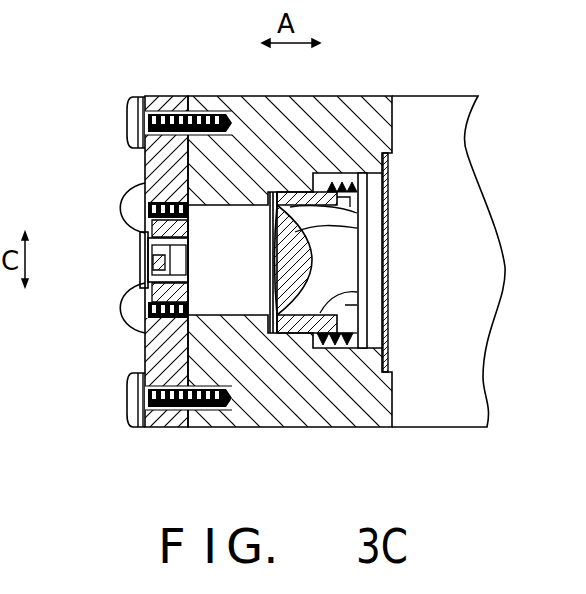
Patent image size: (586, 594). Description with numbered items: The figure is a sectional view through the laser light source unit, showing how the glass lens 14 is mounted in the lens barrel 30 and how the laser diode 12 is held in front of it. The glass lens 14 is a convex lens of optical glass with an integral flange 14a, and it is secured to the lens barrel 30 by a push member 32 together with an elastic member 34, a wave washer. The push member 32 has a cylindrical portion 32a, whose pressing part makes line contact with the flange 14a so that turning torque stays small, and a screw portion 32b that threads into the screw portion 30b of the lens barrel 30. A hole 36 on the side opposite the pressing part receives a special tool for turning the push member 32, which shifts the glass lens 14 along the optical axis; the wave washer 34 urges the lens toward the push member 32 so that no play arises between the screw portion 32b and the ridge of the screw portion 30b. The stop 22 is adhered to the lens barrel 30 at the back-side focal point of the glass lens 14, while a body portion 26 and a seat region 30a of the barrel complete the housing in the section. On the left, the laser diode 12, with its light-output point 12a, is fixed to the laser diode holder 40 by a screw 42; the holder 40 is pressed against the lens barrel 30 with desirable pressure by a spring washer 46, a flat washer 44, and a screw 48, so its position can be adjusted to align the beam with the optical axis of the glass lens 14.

The laser diode 12 is at (140, 252).
The light-output point 12a is at (147, 265).
The glass lens 14 is at (312, 255).
The flange 14a is at (272, 192).
The stop 22 is at (388, 347).
The camera body 26 is at (448, 96).
The lens barrel 30 is at (343, 187).
The lens seat ring 30a is at (290, 192).
The screw portion of the lens barrel 30b is at (385, 175).
The push member 32 is at (345, 292).
The cylindrical portion 32a is at (340, 208).
The screw portion 32b is at (340, 335).
The elastic member 34 is at (363, 230).
The hole 36 is at (356, 184).
The laser diode holder 40 is at (175, 95).
The screw 42 is at (135, 193).
The flat washer 44 is at (141, 96).
The spring washer 46 is at (138, 97).
The screw 48 is at (127, 118).